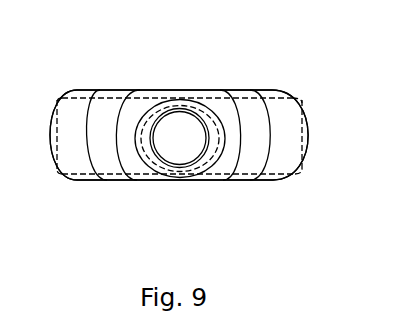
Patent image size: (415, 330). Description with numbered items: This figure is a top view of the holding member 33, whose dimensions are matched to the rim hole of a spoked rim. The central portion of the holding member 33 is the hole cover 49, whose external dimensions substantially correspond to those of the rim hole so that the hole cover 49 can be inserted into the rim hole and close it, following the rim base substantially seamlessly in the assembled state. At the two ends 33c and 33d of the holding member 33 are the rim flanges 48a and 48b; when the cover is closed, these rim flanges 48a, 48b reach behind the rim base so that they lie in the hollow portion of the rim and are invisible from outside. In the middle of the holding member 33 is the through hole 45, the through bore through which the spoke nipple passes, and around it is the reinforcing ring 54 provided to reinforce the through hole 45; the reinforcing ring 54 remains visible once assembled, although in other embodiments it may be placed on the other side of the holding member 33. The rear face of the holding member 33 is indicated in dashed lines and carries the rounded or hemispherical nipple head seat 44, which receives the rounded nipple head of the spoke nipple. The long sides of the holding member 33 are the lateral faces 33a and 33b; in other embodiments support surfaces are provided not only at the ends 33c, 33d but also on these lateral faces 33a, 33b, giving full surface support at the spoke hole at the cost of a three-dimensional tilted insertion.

The holding member 33 is at (174, 190).
The lateral face 33a is at (178, 85).
The lateral face 33b is at (140, 188).
The end 33c is at (315, 127).
The end 33d is at (43, 142).
The nipple head seat 44 is at (203, 158).
The through hole 45 is at (180, 128).
The rim flange 48a is at (282, 158).
The rim flange 48b is at (70, 160).
The hole cover 49 is at (107, 118).
The reinforcing ring 54 is at (137, 108).